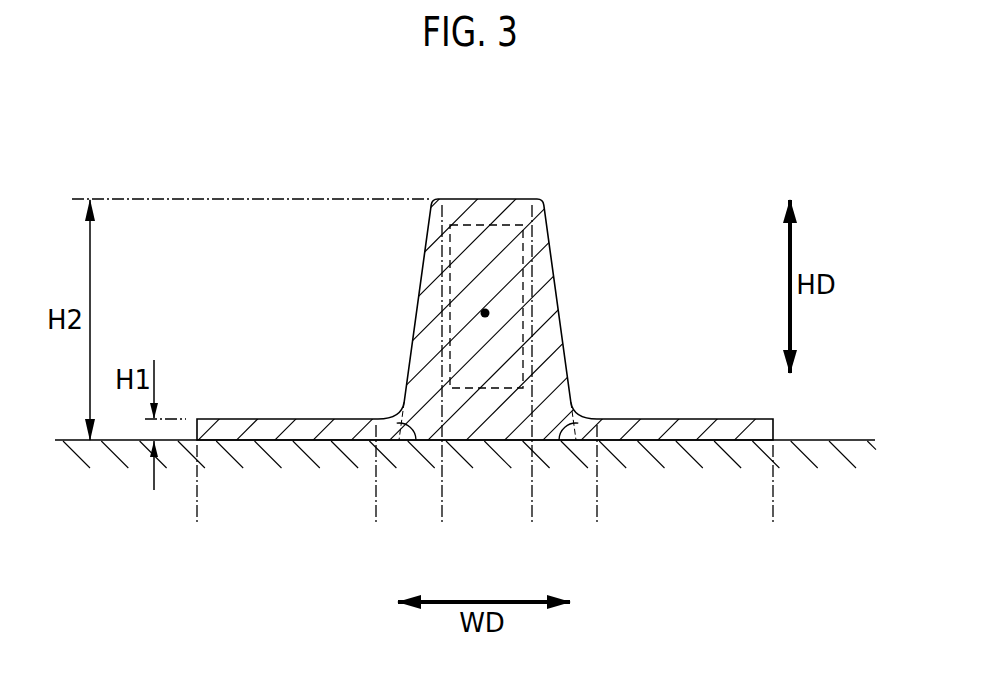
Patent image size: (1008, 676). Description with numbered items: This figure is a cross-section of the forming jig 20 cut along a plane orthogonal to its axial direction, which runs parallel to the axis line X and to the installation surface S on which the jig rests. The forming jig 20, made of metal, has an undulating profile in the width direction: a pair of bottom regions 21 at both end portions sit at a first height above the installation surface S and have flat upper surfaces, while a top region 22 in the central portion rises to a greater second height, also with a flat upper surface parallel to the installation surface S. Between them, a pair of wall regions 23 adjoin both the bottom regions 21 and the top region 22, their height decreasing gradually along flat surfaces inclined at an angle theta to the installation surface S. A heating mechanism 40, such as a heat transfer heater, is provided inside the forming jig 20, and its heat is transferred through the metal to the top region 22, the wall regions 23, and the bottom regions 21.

The forming jig 20 is at (316, 184).
The bottom regions 21 is at (197, 524).
The top region 22 is at (442, 524).
The wall regions 23 is at (376, 524).
The heating mechanism 40 is at (523, 250).
The installation surface S is at (838, 440).
The axis line X is at (485, 316).